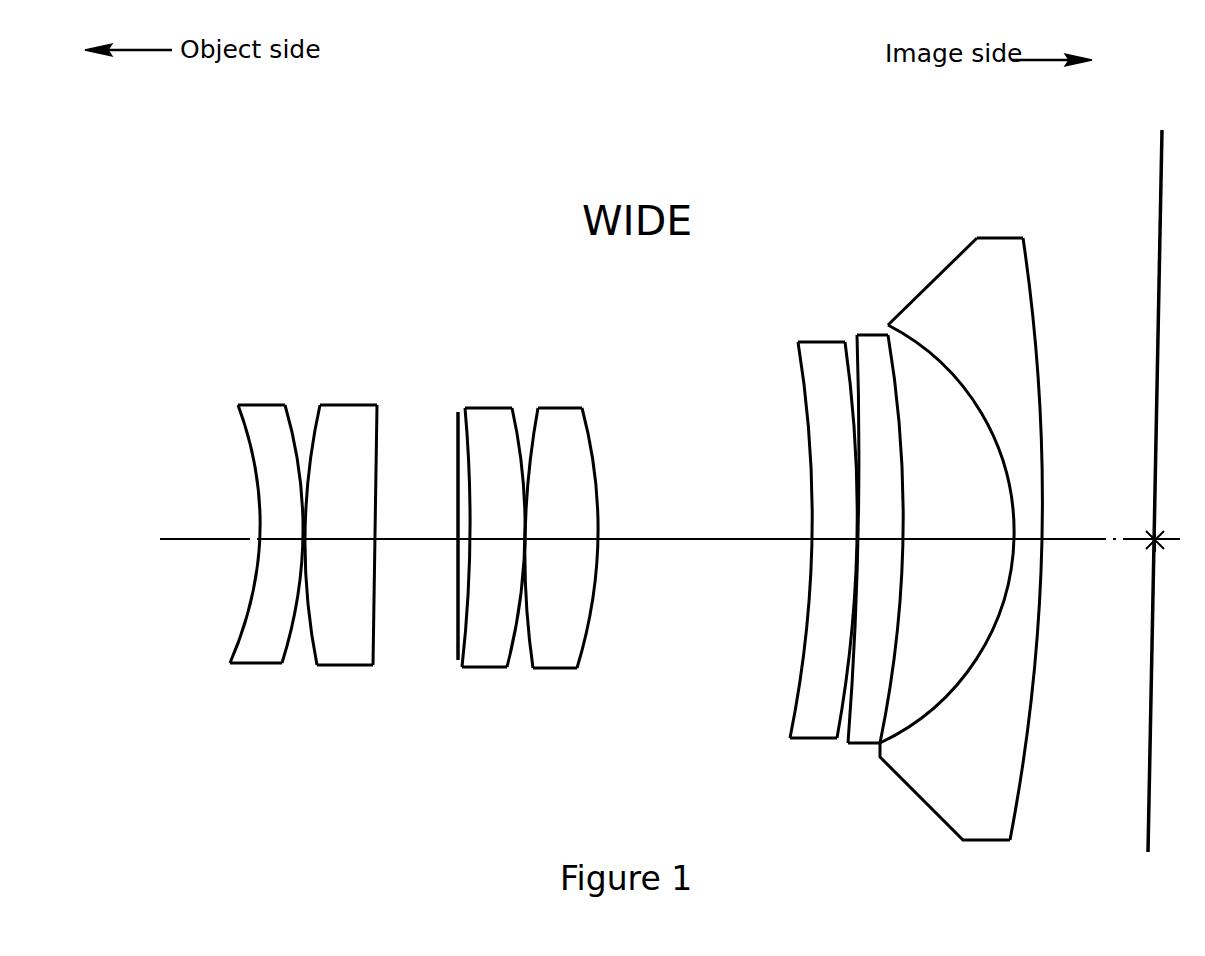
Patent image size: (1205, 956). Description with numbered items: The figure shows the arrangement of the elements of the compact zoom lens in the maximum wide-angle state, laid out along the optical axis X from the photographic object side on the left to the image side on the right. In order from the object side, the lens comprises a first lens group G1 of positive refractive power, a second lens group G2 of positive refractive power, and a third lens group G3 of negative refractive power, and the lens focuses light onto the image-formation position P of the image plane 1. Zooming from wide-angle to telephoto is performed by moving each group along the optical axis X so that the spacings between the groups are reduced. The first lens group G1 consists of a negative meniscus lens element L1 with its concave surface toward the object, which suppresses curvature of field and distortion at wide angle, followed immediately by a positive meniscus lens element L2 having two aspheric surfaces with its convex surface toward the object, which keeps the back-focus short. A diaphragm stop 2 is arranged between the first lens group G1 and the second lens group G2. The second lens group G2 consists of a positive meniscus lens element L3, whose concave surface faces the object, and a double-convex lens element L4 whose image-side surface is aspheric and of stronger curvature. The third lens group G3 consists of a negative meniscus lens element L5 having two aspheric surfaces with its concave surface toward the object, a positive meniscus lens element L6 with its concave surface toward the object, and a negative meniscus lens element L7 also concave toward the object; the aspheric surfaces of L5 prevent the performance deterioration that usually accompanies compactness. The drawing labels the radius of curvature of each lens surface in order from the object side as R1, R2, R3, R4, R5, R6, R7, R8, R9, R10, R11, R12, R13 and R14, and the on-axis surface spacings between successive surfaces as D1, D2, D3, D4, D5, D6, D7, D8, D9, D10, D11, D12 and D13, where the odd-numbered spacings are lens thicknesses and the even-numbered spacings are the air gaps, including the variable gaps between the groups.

The image plane 1 is at (1160, 150).
The diaphragm stop 2 is at (455, 640).
The optical axis X is at (186, 545).
The image-formation position P is at (1163, 529).
The first lens group G1 is at (315, 727).
The second lens group G2 is at (543, 732).
The third lens group G3 is at (917, 193).
The negative meniscus lens element L1 is at (244, 508).
The positive meniscus lens element L2 is at (362, 509).
The positive meniscus lens element L3 is at (486, 510).
The double-convex lens element L4 is at (586, 512).
The negative meniscus lens element L5 is at (846, 513).
The positive meniscus lens element L6 is at (878, 510).
The negative meniscus lens element L7 is at (993, 514).
The radius of curvature of first surface R1 is at (238, 420).
The radius of curvature of second surface R2 is at (294, 407).
The radius of curvature of third surface R3 is at (310, 424).
The radius of curvature of fourth surface R4 is at (380, 436).
The radius of curvature of fifth surface R5 is at (463, 450).
The radius of curvature of sixth surface R6 is at (518, 424).
The radius of curvature of seventh surface R7 is at (528, 428).
The radius of curvature of eighth surface R8 is at (594, 446).
The radius of curvature of ninth surface R9 is at (805, 435).
The radius of curvature of tenth surface R10 is at (850, 408).
The radius of curvature of eleventh surface R11 is at (857, 377).
The radius of curvature of twelfth surface R12 is at (896, 379).
The radius of curvature of thirteenth surface R13 is at (992, 440).
The radius of curvature of fourteenth surface R14 is at (1050, 440).
The on-axis surface spacing D1 is at (276, 536).
The on-axis surface spacing D2 is at (305, 541).
The on-axis surface spacing D3 is at (345, 536).
The on-axis surface spacing D4 is at (408, 536).
The on-axis surface spacing D5 is at (498, 536).
The on-axis surface spacing D6 is at (526, 541).
The on-axis surface spacing D7 is at (563, 536).
The on-axis surface spacing D8 is at (694, 536).
The on-axis surface spacing D9 is at (835, 536).
The on-axis surface spacing D10 is at (858, 543).
The on-axis surface spacing D11 is at (885, 536).
The on-axis surface spacing D12 is at (946, 536).
The on-axis surface spacing D13 is at (1030, 537).